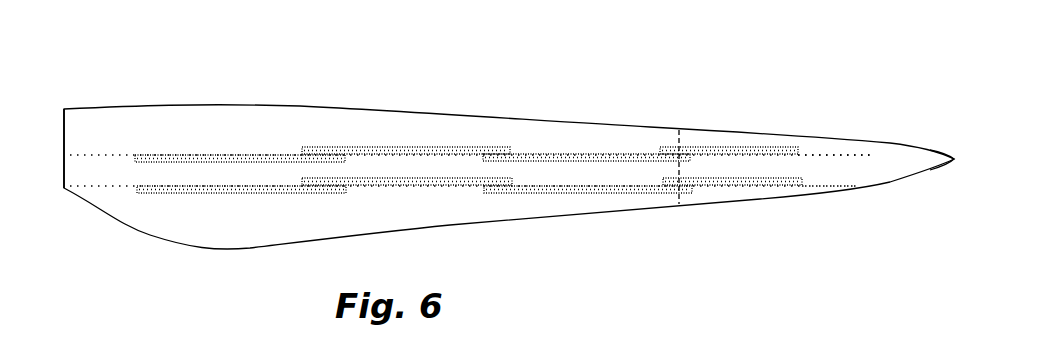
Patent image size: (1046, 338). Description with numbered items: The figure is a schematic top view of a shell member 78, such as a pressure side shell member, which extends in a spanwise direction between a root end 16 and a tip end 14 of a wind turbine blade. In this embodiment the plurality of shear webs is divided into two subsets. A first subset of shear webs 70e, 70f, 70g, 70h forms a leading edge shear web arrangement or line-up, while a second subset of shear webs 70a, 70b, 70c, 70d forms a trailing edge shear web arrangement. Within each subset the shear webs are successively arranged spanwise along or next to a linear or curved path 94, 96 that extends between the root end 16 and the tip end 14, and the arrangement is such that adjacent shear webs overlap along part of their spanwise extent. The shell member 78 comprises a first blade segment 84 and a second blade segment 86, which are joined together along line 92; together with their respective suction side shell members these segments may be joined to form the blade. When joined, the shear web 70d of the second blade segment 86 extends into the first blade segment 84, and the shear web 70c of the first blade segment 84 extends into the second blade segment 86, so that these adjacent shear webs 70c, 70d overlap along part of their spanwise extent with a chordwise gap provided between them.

The tip end 14 is at (952, 158).
The root end 16 is at (64, 125).
The shear web 70a is at (165, 193).
The shear web 70b is at (403, 180).
The shear web 70c is at (563, 193).
The shear web 70d is at (753, 182).
The shear web 70e is at (147, 157).
The shear web 70f is at (447, 148).
The shear web 70g is at (592, 159).
The shear web 70h is at (757, 147).
The shell member 78 is at (328, 123).
The first blade segment 84 is at (225, 125).
The second blade segment 86 is at (813, 145).
The line 92 is at (679, 148).
The path 94 is at (860, 155).
The path 96 is at (828, 187).